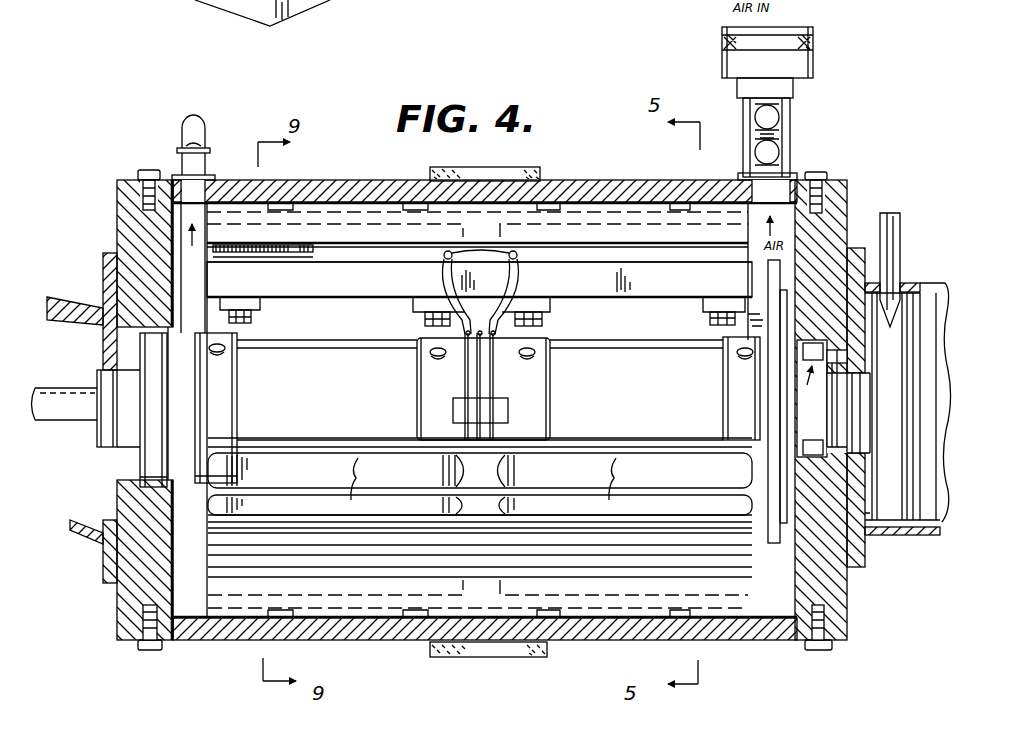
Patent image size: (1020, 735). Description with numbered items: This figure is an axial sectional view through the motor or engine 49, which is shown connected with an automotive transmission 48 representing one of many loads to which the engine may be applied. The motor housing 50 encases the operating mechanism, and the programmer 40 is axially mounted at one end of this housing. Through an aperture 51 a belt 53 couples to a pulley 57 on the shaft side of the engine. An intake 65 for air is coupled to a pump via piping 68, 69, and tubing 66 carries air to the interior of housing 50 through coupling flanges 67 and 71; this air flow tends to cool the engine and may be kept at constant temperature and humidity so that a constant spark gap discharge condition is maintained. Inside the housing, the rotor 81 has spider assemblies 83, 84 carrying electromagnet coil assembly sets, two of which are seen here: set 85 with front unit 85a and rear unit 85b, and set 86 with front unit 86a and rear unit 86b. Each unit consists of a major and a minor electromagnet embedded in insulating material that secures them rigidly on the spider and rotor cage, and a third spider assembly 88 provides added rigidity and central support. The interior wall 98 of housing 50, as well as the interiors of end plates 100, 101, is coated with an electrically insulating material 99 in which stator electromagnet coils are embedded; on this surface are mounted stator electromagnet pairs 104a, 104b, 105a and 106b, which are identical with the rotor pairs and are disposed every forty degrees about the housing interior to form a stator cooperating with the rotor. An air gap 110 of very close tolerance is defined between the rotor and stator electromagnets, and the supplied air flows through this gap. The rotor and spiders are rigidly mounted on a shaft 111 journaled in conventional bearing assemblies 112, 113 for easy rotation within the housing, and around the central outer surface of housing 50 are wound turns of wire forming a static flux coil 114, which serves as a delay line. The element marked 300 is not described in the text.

The programmer 40 is at (912, 544).
The automotive transmission 48 is at (94, 541).
The motor or engine 49 is at (105, 633).
The motor housing 50 is at (633, 181).
The aperture 51 is at (895, 282).
The belt 53 is at (898, 222).
The pulley 57 is at (903, 330).
The air intake 65 is at (812, 64).
The tubing or piping 66 is at (203, 126).
The coupling flange 67 is at (181, 176).
The piping 68 is at (781, 116).
The piping 69 is at (781, 152).
The coupling flange 71 is at (739, 174).
The rotor 81 is at (480, 390).
The spider assembly 83 is at (740, 322).
The spider assembly 84 is at (226, 324).
The electromagnet coil assembly set 85 is at (668, 304).
The front electromagnet unit 85a is at (616, 255).
The rear electromagnet unit 85b is at (343, 255).
The electromagnet coil assembly set 86 is at (640, 434).
The front electromagnet unit 86a is at (636, 479).
The rear electromagnet unit 86b is at (378, 479).
The third spider assembly 88 is at (483, 389).
The interior wall 98 is at (326, 204).
The electrically insulating material 99 is at (426, 204).
The end plate 100 is at (847, 183).
The end plate 101 is at (125, 217).
The stator electromagnet pair 104a is at (624, 233).
The stator electromagnet pair 104b is at (335, 233).
The stator electromagnet pair 105a is at (624, 591).
The stator electromagnet pair 106b is at (335, 591).
The air gap 110 is at (296, 244).
The shaft 111 is at (52, 415).
The bearing assembly 112 is at (150, 430).
The bearing assembly 113 is at (822, 398).
The static flux coil 114 is at (489, 160).
The seal 300 is at (893, 213).